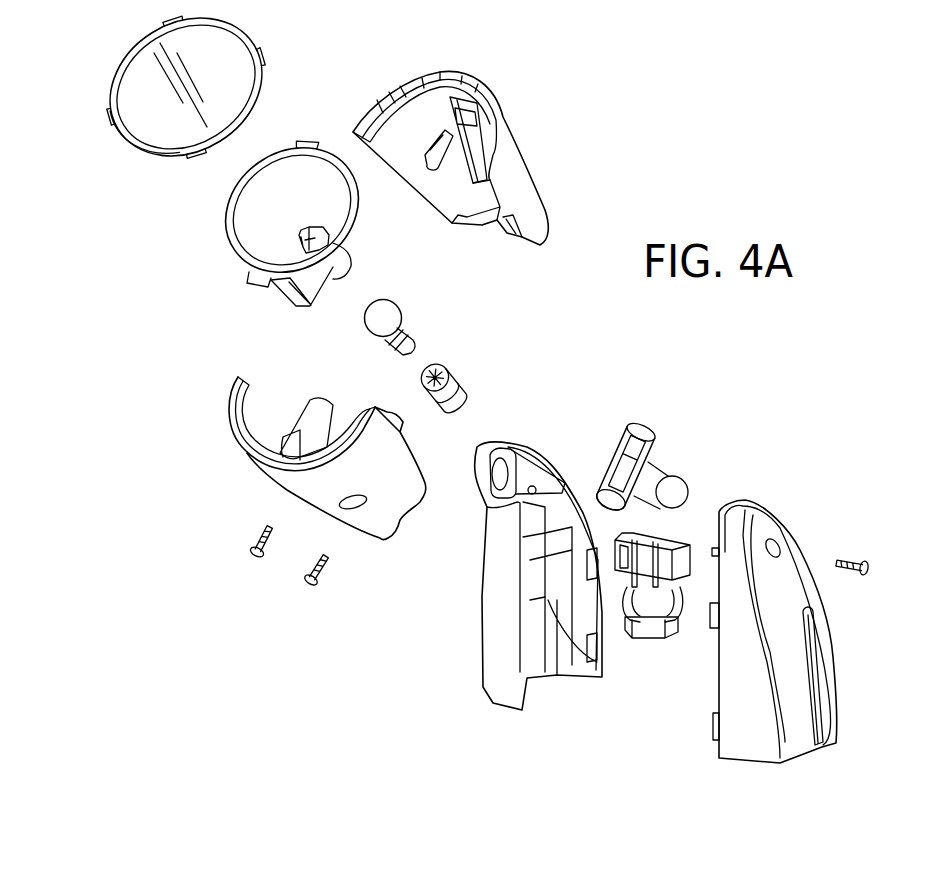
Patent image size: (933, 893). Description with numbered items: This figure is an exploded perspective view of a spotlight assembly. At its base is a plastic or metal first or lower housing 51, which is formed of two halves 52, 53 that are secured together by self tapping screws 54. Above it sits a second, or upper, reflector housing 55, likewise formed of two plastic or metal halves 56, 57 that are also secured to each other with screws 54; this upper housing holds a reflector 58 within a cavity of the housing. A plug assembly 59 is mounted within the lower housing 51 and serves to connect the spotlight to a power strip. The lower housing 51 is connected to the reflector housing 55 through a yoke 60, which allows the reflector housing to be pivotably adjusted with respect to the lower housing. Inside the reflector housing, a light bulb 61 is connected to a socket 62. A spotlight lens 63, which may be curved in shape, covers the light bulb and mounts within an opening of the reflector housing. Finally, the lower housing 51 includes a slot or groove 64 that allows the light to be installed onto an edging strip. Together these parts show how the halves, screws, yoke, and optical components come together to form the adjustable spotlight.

The lower housing 51 is at (848, 745).
The housing half 52 is at (492, 562).
The housing half 53 is at (727, 683).
The self tapping screws 54 is at (306, 584).
The reflector housing 55 is at (160, 364).
The reflector housing half 56 is at (230, 412).
The reflector housing half 57 is at (513, 150).
The reflector 58 is at (225, 215).
The plug assembly 59 is at (645, 638).
The yoke 60 is at (650, 428).
The light bulb 61 is at (385, 312).
The socket 62 is at (458, 383).
The spotlight lens 63 is at (132, 62).
The slot or groove 64 is at (818, 687).